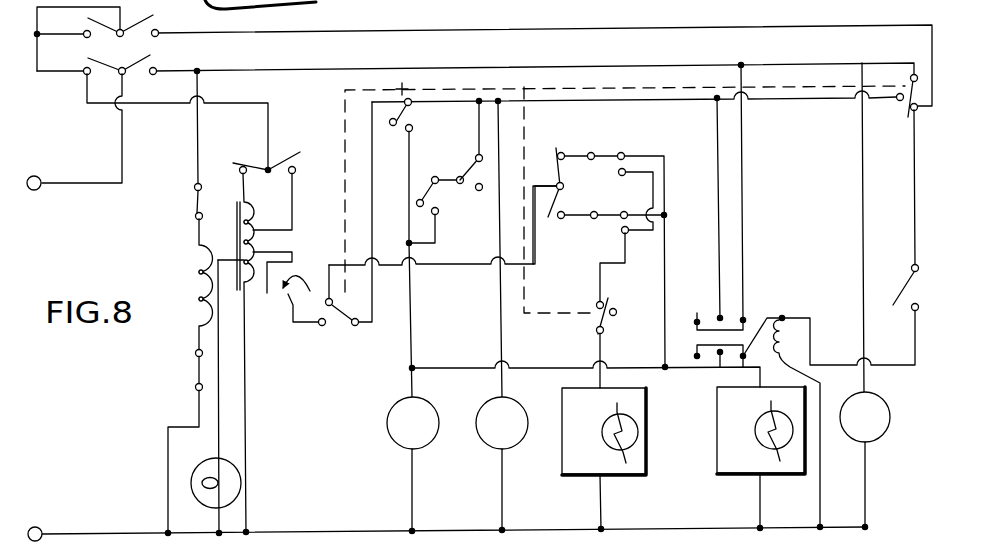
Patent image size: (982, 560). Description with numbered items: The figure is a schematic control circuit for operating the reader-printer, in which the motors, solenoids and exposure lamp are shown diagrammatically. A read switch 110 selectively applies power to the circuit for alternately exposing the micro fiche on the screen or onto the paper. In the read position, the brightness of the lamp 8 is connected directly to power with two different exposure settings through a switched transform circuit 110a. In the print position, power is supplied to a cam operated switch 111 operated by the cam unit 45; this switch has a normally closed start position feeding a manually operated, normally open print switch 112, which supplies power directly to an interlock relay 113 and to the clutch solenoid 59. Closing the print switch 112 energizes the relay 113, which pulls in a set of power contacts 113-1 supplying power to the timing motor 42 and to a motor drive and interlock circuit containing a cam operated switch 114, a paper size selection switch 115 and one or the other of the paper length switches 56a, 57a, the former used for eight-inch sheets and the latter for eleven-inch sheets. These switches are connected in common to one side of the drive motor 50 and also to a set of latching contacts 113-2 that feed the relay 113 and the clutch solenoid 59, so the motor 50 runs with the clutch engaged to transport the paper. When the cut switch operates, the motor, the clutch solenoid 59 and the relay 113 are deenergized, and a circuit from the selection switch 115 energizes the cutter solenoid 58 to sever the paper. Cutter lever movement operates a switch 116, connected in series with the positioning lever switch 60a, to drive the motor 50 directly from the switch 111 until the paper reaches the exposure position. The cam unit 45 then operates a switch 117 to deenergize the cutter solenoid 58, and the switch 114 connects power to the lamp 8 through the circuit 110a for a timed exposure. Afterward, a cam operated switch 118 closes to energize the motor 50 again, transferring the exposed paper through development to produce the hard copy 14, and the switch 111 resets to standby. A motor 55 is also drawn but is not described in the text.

The hard copy 14 is at (331, 5).
The read switch 110 is at (163, 42).
The switched transform circuit 110a is at (286, 204).
The exposure lamp 8 is at (190, 484).
The cam operated switch 114 is at (335, 327).
The cam unit 45 is at (340, 104).
The cam operated switch 118 is at (413, 118).
The switch 116 is at (440, 198).
The positioning lever switch 60a is at (464, 167).
The paper size selection switch 115 is at (570, 197).
The cut switch 56a is at (614, 149).
The cut switch 57a is at (608, 225).
The cam operated switch 117 is at (597, 319).
The drive motor 50 is at (388, 437).
The timing motor 42 is at (485, 449).
The cutter solenoid 58 is at (582, 474).
The clutch solenoid 59 is at (732, 476).
The interlock relay 113 is at (771, 301).
The power contacts 113-1 is at (710, 302).
The latching contacts 113-2 is at (720, 375).
The cam operated switch 111 is at (904, 106).
The print switch 112 is at (901, 274).
The motor 55 is at (893, 422).